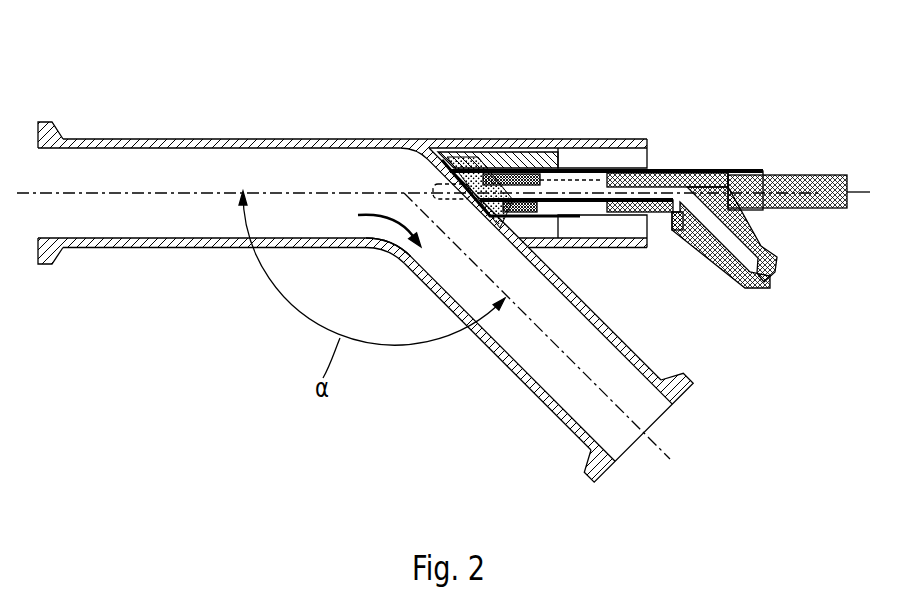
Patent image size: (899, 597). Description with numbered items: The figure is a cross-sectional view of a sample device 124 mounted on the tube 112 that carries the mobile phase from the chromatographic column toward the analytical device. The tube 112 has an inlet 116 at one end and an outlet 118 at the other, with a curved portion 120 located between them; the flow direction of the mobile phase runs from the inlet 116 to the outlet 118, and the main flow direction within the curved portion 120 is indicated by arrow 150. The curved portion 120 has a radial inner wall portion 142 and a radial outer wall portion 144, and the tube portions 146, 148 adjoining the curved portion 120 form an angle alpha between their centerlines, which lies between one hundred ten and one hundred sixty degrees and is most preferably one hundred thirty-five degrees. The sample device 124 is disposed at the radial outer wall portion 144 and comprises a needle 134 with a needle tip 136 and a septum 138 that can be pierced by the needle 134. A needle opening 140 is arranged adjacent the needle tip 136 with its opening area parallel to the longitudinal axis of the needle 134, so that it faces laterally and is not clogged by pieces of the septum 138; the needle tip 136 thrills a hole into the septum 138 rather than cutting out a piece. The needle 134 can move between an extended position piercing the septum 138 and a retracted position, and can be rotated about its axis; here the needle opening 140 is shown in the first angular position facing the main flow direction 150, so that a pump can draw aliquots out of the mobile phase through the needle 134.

The tube 112 is at (254, 113).
The inlet 116 is at (41, 121).
The outlet 118 is at (590, 475).
The curved portion 120 is at (385, 115).
The sample device 124 is at (683, 130).
The needle 134 is at (588, 188).
The needle tip 136 is at (497, 172).
The septum 138 is at (468, 206).
The needle opening 140 is at (455, 150).
The radial inner wall portion 142 is at (380, 252).
The radial outer wall portion 144 is at (414, 148).
The tube portion 146 is at (149, 139).
The tube portion 148 is at (503, 362).
The main flow direction 150 is at (393, 239).